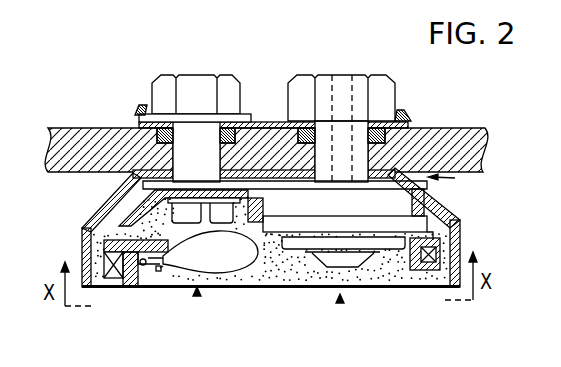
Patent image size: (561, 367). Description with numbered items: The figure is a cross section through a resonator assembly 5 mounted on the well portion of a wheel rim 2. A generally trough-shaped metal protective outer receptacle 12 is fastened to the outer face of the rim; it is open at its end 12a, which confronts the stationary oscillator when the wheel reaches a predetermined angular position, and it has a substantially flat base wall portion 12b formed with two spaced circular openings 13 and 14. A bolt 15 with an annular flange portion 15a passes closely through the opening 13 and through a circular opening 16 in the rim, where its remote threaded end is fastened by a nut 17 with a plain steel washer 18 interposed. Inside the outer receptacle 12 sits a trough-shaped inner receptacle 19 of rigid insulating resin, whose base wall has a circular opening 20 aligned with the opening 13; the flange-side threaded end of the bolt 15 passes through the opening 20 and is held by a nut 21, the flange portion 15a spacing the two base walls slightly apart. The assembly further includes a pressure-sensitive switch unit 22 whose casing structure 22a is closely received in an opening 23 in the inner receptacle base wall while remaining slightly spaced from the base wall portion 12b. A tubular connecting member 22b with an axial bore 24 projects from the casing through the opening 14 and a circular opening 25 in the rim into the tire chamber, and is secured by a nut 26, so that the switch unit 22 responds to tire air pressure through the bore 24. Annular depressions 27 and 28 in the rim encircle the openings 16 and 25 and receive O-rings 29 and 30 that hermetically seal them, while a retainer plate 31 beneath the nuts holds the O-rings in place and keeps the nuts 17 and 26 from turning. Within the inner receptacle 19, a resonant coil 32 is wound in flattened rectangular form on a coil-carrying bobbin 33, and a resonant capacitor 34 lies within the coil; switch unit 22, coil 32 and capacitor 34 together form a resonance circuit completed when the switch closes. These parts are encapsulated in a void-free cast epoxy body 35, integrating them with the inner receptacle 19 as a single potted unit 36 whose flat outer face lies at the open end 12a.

The wheel rim 2 is at (470, 128).
The resonator assembly 5 is at (455, 178).
The protective outer receptacle 12 is at (458, 222).
The open end of the protective outer receptacle 12a is at (197, 290).
The base wall portion 12b is at (270, 182).
The circular opening 13 is at (221, 172).
The circular opening 14 is at (317, 176).
The bolt 15 is at (172, 164).
The annular flange portion 15a is at (165, 185).
The circular opening 16 is at (218, 140).
The nut 17 is at (166, 82).
The plain steel washer 18 is at (160, 113).
The inner receptacle 19 is at (113, 229).
The circular opening 20 is at (188, 193).
The nut 21 is at (173, 212).
The pressure-sensitive switch unit 22 is at (423, 193).
The casing structure 22a is at (433, 238).
The tubular connecting member 22b is at (352, 178).
The opening 23 is at (265, 216).
The axial bore 24 is at (345, 90).
The circular opening 25 is at (368, 155).
The nut 26 is at (300, 82).
The annular depression 27 is at (157, 150).
The annular depression 28 is at (386, 137).
The O-ring 29 is at (157, 136).
The O-ring 30 is at (385, 120).
The retainer plate 31 is at (137, 108).
The resonant coil 32 is at (430, 262).
The coil-carrying bobbin 33 is at (410, 263).
The resonant capacitor 34 is at (243, 258).
The body of dielectric compound 35 is at (313, 279).
The potted resonance circuit structure unit 36 is at (340, 298).